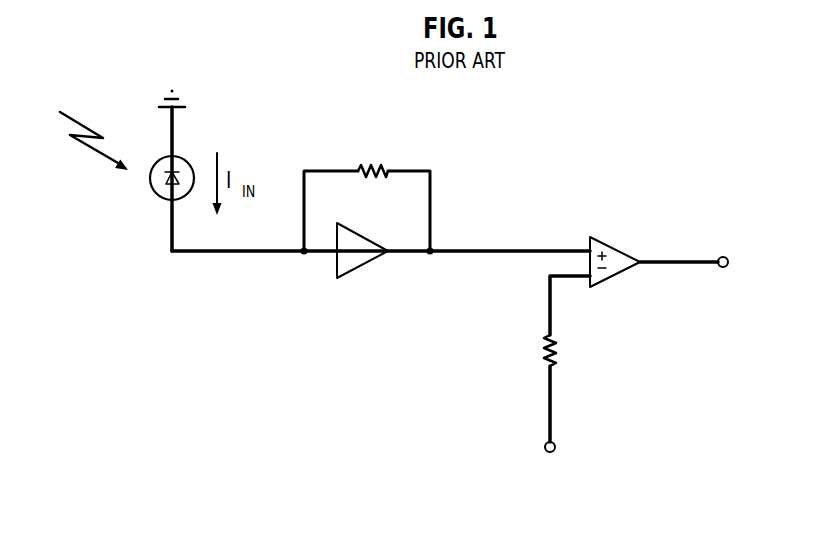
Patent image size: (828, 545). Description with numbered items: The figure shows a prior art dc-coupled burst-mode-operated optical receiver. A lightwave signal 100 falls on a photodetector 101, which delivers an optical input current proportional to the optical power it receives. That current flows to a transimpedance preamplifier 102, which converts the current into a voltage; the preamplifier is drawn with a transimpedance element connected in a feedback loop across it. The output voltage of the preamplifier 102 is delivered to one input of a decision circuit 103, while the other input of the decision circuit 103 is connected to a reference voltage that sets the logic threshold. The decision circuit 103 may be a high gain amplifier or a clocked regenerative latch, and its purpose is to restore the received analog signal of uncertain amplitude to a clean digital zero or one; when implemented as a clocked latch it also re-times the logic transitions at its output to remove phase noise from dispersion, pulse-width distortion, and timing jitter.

The lightwave signal 100 is at (85, 125).
The photodetector 101 is at (158, 198).
The transimpedance preamplifier 102 is at (348, 272).
The decision circuit 103 is at (615, 277).